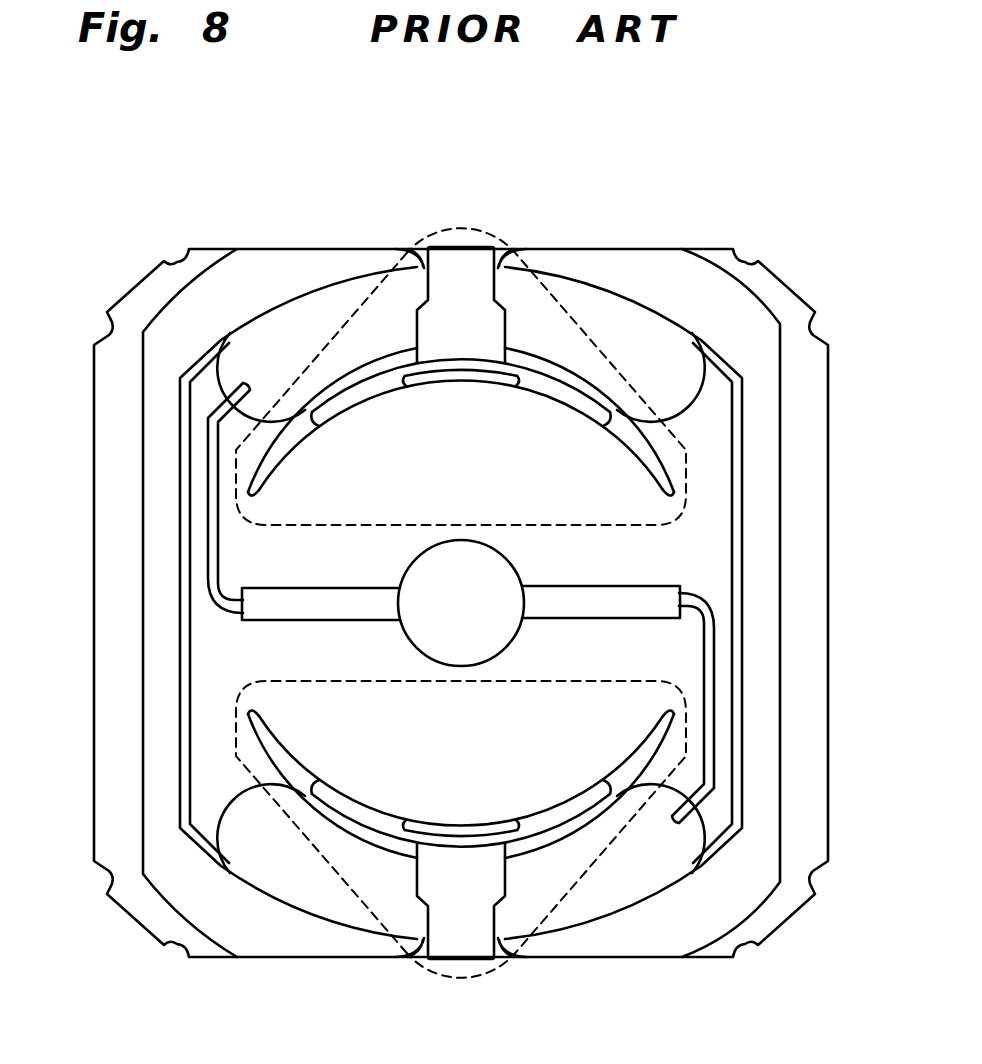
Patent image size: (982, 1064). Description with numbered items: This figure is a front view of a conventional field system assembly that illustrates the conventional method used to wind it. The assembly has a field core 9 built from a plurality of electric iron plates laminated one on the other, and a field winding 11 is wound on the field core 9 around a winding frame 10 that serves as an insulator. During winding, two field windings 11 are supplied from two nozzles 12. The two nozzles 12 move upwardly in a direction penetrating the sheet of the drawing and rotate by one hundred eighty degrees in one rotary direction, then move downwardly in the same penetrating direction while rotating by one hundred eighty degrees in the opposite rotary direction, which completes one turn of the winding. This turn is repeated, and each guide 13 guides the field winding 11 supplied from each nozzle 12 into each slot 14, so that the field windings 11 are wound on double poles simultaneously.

The field core 9 is at (795, 745).
The winding frame 10 is at (490, 327).
The field winding 11 is at (635, 342).
The nozzle 12 is at (638, 602).
The guide 13 is at (337, 322).
The slot 14 is at (702, 408).